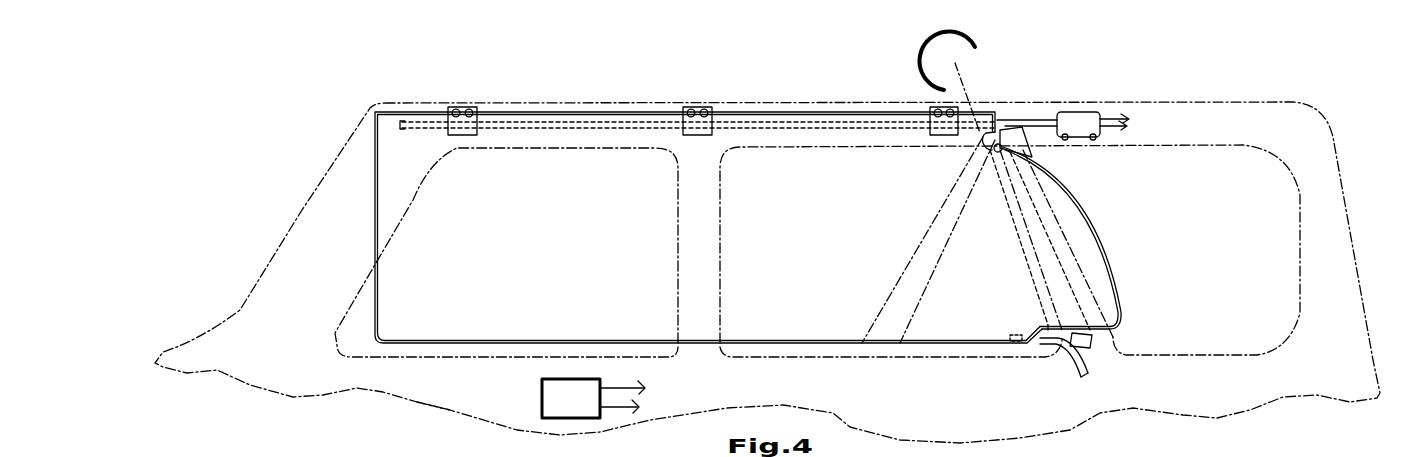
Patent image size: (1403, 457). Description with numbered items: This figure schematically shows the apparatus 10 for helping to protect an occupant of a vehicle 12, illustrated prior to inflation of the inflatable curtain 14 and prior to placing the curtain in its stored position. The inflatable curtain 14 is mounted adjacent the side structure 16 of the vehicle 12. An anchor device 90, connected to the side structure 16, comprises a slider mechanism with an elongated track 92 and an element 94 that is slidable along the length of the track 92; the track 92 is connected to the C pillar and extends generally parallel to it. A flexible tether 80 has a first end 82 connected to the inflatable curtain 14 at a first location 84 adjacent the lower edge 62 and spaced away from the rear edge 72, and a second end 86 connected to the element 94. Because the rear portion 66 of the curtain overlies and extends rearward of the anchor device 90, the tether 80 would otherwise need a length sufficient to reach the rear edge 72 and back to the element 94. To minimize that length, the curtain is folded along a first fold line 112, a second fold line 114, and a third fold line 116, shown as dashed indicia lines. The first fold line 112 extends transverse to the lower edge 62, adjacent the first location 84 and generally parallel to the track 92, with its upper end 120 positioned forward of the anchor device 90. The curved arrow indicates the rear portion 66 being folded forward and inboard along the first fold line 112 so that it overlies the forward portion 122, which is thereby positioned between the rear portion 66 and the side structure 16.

The apparatus 10 is at (330, 115).
The vehicle 12 is at (290, 148).
The inflatable curtain 14 is at (567, 140).
The side structure 16 is at (433, 382).
The lower edge 62 is at (682, 347).
The rear portion 66 is at (1093, 268).
The rear edge 72 is at (1118, 295).
The tether 80 is at (1060, 367).
The first end 82 is at (982, 347).
The first location 84 is at (1015, 348).
The second end 86 is at (1092, 373).
The anchor device 90 is at (1018, 145).
The track 92 is at (1045, 228).
The element 94 is at (997, 140).
The first fold line 112 is at (1018, 242).
The second fold line 114 is at (925, 285).
The third fold line 116 is at (912, 262).
The upper end 120 is at (997, 182).
The forward portion 122 is at (997, 315).